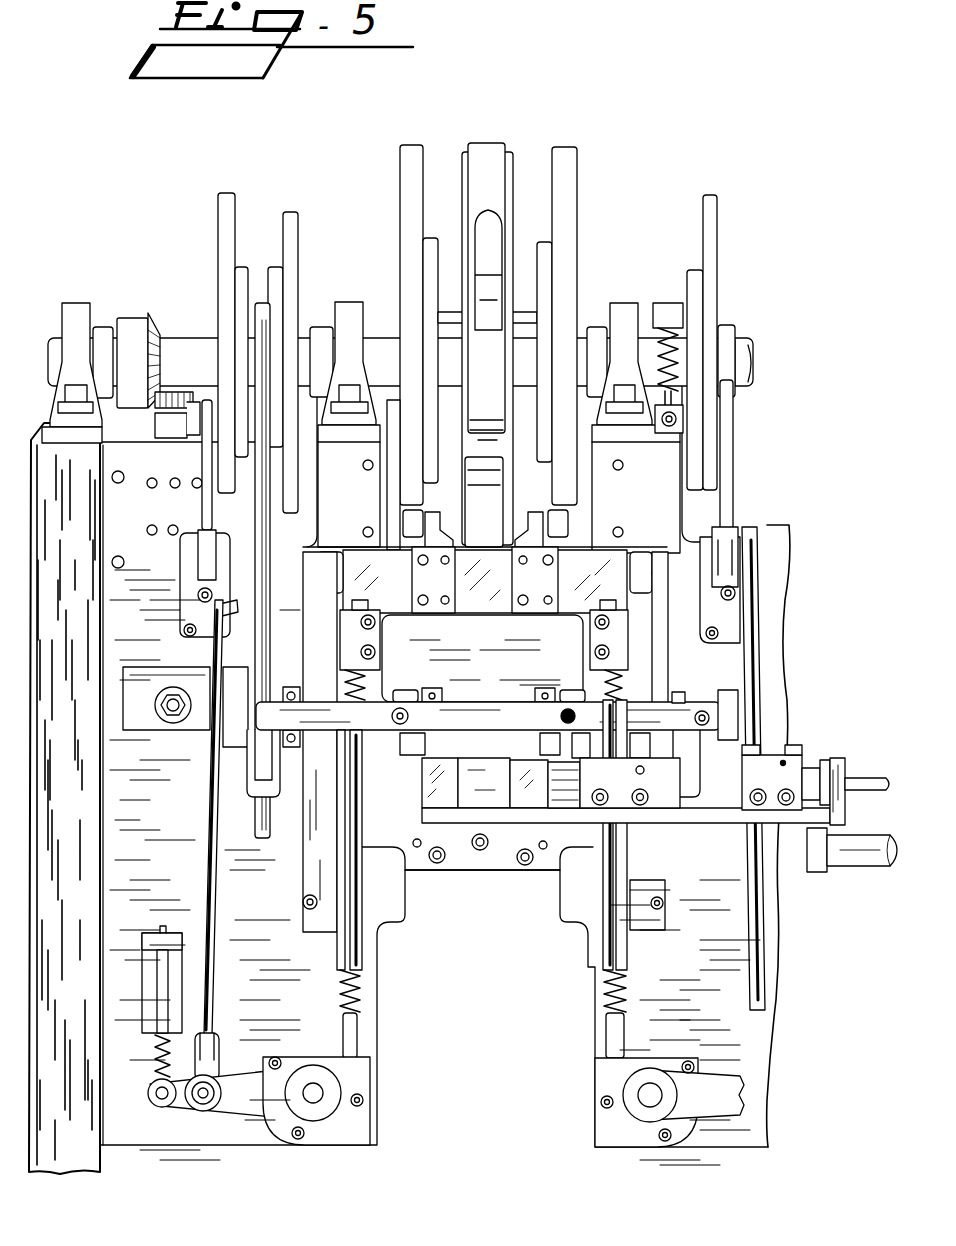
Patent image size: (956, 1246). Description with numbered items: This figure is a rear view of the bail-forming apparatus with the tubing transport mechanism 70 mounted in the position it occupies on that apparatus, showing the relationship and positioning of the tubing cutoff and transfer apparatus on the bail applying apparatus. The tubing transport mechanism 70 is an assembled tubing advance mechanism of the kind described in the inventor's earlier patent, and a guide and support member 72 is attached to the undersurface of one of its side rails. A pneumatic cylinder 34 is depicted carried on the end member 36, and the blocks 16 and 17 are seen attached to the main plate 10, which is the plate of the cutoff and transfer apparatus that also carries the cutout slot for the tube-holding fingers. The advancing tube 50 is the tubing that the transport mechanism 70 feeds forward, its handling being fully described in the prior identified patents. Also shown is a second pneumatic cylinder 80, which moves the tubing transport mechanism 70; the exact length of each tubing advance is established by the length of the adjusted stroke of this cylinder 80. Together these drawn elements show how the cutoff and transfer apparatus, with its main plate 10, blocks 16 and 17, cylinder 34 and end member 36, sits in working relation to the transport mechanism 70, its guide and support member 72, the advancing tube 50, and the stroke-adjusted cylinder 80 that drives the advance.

The main plate 10 is at (524, 672).
The block 16 is at (432, 688).
The block 17 is at (545, 688).
The pneumatic cylinder 34 is at (500, 803).
The end member 36 is at (445, 800).
The advancing tube 50 is at (856, 782).
The tubing transport mechanism 70 is at (850, 738).
The guide and support member 72 is at (557, 822).
The pneumatic cylinder 80 is at (850, 868).